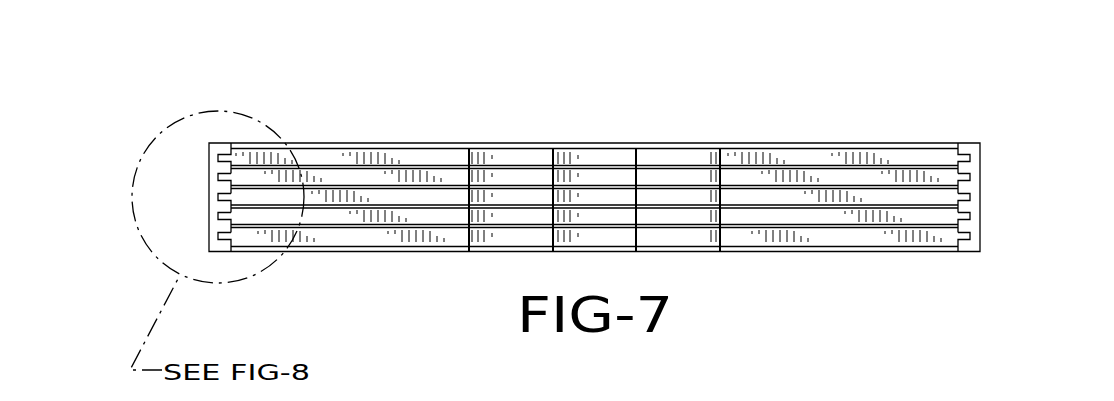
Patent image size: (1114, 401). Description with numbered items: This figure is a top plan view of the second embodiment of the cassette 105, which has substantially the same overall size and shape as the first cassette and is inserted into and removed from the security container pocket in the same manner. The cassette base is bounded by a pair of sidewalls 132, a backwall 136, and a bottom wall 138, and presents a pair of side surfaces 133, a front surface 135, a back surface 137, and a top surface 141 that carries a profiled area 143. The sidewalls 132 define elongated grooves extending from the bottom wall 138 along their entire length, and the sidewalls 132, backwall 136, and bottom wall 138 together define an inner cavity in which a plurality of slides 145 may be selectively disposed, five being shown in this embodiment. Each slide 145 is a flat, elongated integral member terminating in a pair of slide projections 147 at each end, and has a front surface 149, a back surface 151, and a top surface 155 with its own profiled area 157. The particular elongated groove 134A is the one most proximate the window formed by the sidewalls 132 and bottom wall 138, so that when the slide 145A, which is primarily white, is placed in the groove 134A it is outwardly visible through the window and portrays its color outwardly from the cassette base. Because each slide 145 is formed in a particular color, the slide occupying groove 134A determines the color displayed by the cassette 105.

The cassette 105 is at (938, 123).
The sidewalls 132 is at (205, 183).
The side surfaces 133 is at (208, 206).
The elongated groove 134A is at (218, 158).
The front surface 135 is at (222, 148).
The backwall 136 is at (886, 254).
The back surface 137 is at (843, 253).
The bottom wall 138 is at (534, 142).
The top surface 141 is at (970, 227).
The profiled area 143 is at (678, 253).
The slides 145 is at (357, 241).
The slide 145A is at (811, 156).
The slide projections 147 is at (222, 156).
The front surface 149 is at (441, 149).
The back surface 151 is at (426, 246).
The top surface 155 is at (318, 157).
The profiled area 157 is at (658, 152).